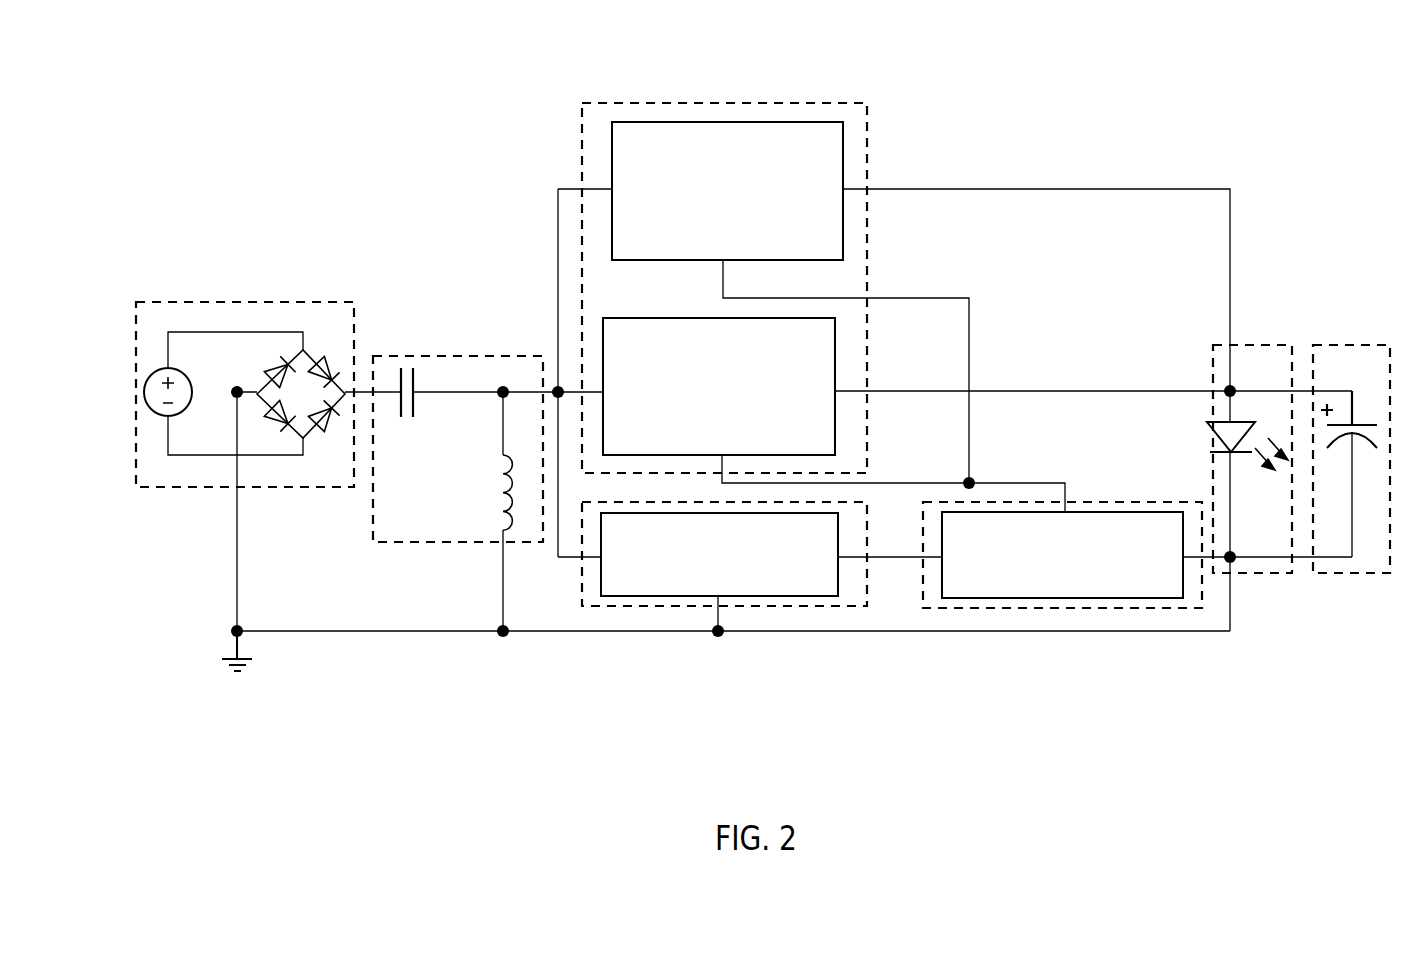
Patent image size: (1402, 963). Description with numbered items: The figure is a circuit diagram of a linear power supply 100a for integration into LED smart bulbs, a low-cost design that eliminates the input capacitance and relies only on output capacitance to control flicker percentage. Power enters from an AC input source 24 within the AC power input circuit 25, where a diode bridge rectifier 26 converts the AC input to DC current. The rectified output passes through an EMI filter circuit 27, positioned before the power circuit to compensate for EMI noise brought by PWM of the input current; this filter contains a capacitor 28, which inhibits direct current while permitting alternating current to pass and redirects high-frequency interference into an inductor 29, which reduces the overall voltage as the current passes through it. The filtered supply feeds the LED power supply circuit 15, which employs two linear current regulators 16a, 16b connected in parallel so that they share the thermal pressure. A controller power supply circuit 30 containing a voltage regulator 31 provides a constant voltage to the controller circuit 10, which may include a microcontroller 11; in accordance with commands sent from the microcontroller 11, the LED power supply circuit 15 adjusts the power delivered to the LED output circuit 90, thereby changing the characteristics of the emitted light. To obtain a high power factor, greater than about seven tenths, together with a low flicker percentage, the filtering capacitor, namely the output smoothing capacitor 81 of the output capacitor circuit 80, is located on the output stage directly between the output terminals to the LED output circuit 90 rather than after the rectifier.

The linear power supply 100a is at (362, 138).
The controller circuit 10 is at (1040, 610).
The microcontroller 11 is at (1076, 594).
The LED power supply circuit 15 is at (724, 102).
The linear current regulator 16a is at (746, 206).
The linear current regulator 16b is at (740, 399).
The AC input source 24 is at (167, 396).
The AC power input circuit 25 is at (237, 298).
The bridge rectifier 26 is at (315, 405).
The EMI filter circuit 27 is at (466, 356).
The capacitor 28 is at (406, 383).
The inductor 29 is at (512, 452).
The controller power supply circuit 30 is at (657, 607).
The voltage regulator 31 is at (729, 571).
The output capacitor circuit 80 is at (1350, 345).
The output smoothing capacitor 81 is at (1338, 487).
The LED output circuit 90 is at (1250, 345).